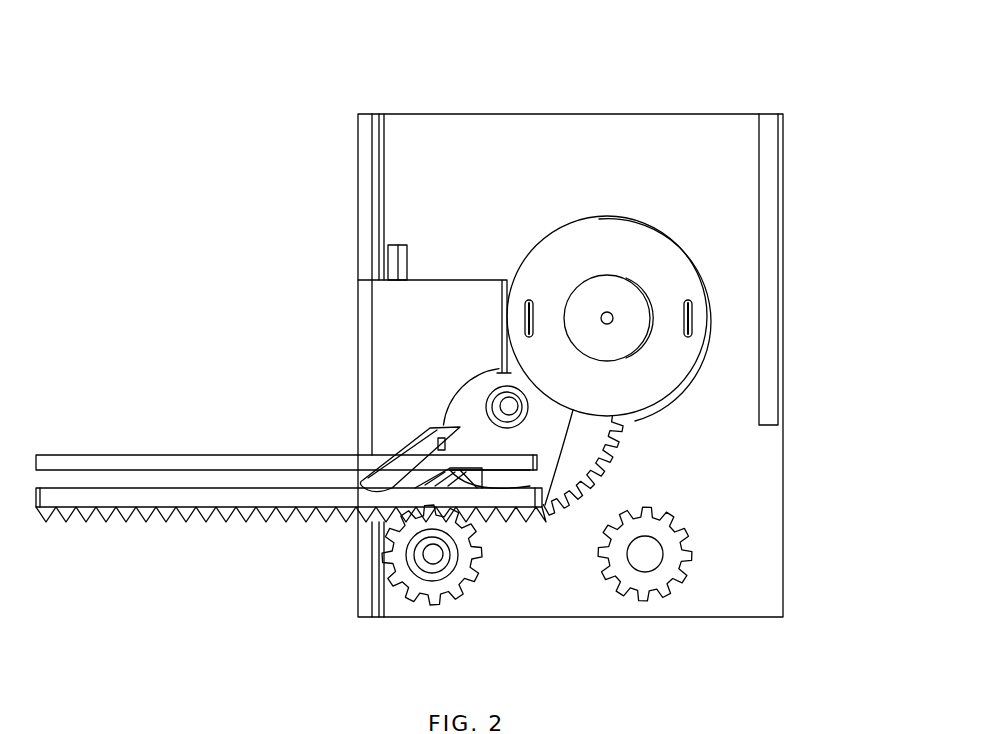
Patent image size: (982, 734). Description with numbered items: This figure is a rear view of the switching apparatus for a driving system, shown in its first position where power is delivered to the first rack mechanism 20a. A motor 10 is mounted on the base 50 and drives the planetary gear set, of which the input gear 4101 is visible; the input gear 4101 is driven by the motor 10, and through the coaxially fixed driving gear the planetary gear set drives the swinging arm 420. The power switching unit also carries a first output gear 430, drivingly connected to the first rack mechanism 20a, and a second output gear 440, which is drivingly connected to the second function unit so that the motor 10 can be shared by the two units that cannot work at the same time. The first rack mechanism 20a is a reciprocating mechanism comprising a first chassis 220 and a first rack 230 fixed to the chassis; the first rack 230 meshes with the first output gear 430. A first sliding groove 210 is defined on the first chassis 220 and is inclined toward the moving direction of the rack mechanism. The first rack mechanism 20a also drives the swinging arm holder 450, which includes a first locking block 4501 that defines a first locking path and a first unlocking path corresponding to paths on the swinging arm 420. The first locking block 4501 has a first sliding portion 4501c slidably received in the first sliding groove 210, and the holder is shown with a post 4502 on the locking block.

The motor 10 is at (667, 292).
The base 50 is at (623, 132).
The swinging arm 420 is at (468, 413).
The input gear 4101 is at (617, 462).
The swinging arm holder 450 is at (340, 17).
The first locking block 4501 is at (412, 312).
The pawl post 4502 is at (407, 247).
The first sliding portion 4501c is at (362, 481).
The first rack mechanism 20a is at (287, 608).
The first sliding groove 210 is at (193, 480).
The first chassis 220 is at (270, 462).
The first rack 230 is at (117, 510).
The first output gear 430 is at (422, 604).
The second output gear 440 is at (637, 602).